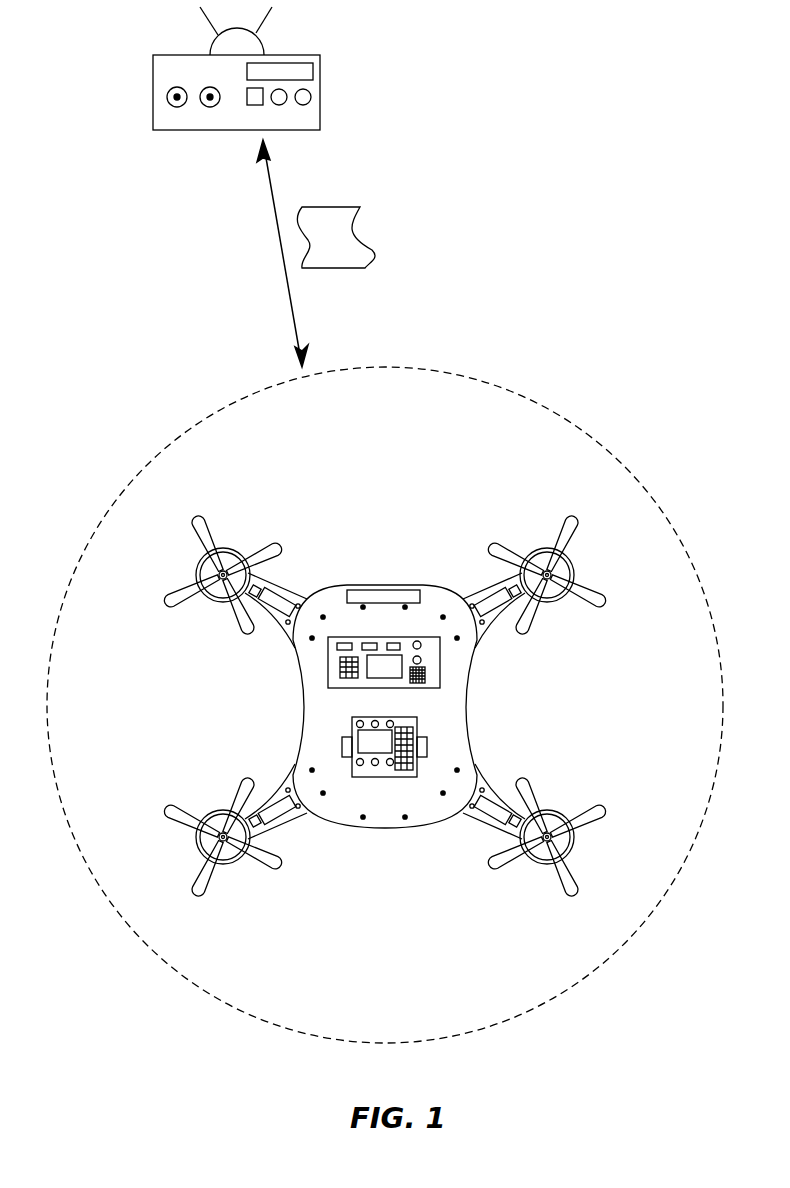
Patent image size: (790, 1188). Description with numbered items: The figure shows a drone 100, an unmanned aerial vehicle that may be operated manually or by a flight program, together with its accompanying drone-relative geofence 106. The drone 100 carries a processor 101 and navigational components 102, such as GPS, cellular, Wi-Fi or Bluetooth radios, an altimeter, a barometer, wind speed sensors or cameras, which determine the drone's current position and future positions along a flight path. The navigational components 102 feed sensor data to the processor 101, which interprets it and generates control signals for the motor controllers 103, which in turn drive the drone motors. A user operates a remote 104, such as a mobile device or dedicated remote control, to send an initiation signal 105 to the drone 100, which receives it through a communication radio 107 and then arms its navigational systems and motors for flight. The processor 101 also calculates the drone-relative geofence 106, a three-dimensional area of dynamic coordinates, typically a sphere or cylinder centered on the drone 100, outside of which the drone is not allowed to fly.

The drone 100 is at (385, 706).
The processor 101 is at (452, 693).
The navigational components 102 is at (424, 673).
The motor controllers 103 is at (385, 772).
The remote 104 is at (320, 68).
The initiation signal 105 is at (347, 240).
The drone-relative geofence 106 is at (490, 358).
The communication radio 107 is at (392, 682).